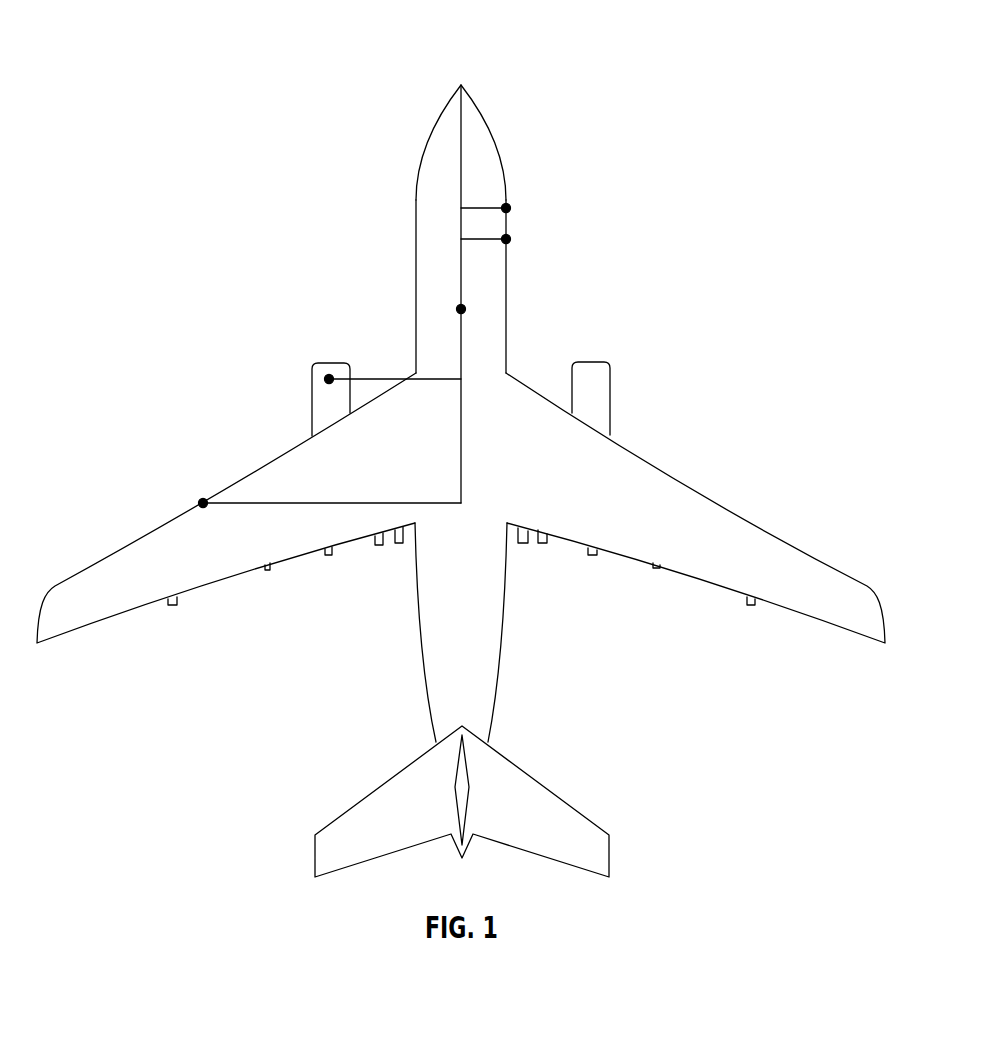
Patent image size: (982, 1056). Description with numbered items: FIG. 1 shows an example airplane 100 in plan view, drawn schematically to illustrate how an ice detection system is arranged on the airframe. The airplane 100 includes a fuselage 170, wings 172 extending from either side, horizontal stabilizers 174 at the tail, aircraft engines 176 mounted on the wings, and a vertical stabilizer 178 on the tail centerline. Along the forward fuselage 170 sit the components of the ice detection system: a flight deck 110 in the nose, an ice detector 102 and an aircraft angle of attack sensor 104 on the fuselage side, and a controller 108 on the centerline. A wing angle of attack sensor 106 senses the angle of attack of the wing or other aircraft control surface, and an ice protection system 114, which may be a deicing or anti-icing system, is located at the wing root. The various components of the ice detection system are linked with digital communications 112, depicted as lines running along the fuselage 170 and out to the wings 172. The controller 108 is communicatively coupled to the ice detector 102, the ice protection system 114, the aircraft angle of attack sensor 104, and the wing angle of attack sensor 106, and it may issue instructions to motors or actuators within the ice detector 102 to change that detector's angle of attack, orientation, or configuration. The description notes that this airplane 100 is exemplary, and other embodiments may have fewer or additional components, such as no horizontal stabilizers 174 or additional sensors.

The airplane 100 is at (435, 120).
The ice detector 102 is at (506, 208).
The aircraft angle of attack sensor 104 is at (506, 239).
The wing angle of attack sensor 106 is at (462, 477).
The controller 108 is at (461, 309).
The flight deck 110 is at (474, 92).
The digital communications 112 is at (343, 503).
The ice protection system 114 is at (203, 502).
The fuselage 170 is at (416, 219).
The wings 172 is at (117, 548).
The horizontal stabilizers 174 is at (365, 797).
The aircraft engines 176 is at (332, 362).
The vertical stabilizer 178 is at (455, 804).